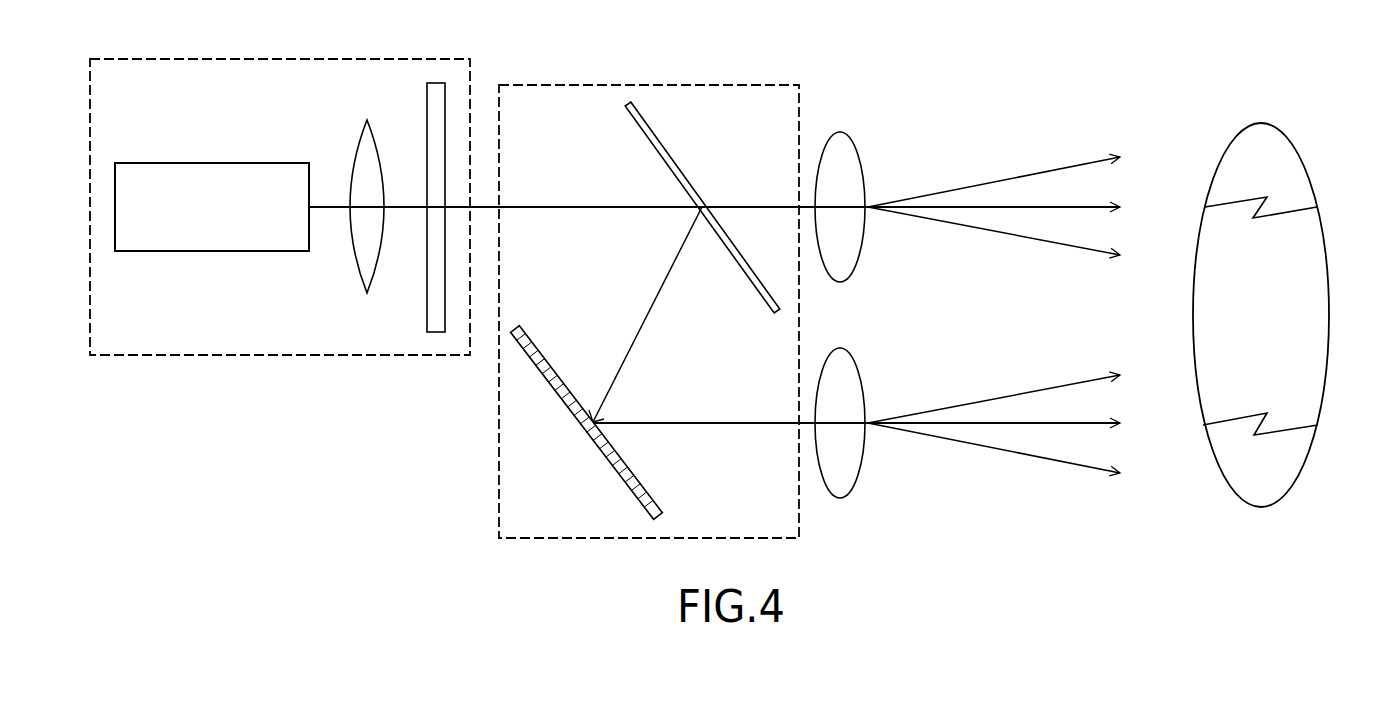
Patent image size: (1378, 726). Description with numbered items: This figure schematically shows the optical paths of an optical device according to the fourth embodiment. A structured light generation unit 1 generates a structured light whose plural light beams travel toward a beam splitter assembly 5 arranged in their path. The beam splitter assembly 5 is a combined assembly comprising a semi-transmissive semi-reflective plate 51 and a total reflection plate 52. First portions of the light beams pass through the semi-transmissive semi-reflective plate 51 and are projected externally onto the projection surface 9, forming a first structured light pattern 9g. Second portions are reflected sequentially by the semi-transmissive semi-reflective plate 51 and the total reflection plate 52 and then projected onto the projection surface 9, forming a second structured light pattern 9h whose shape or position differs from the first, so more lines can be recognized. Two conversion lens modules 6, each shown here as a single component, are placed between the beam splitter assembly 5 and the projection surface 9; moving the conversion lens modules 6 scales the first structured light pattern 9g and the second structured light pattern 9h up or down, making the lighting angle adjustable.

The structured light generation unit 1 is at (182, 58).
The beam splitter assembly 5 is at (649, 287).
The semi-transmissive semi-reflective plate 51 is at (674, 156).
The total reflection plate 52 is at (590, 438).
The conversion lens module 6 is at (847, 168).
The projection surface 9 is at (1282, 305).
The first structured light pattern 9g is at (1302, 204).
The second structured light pattern 9h is at (1307, 420).